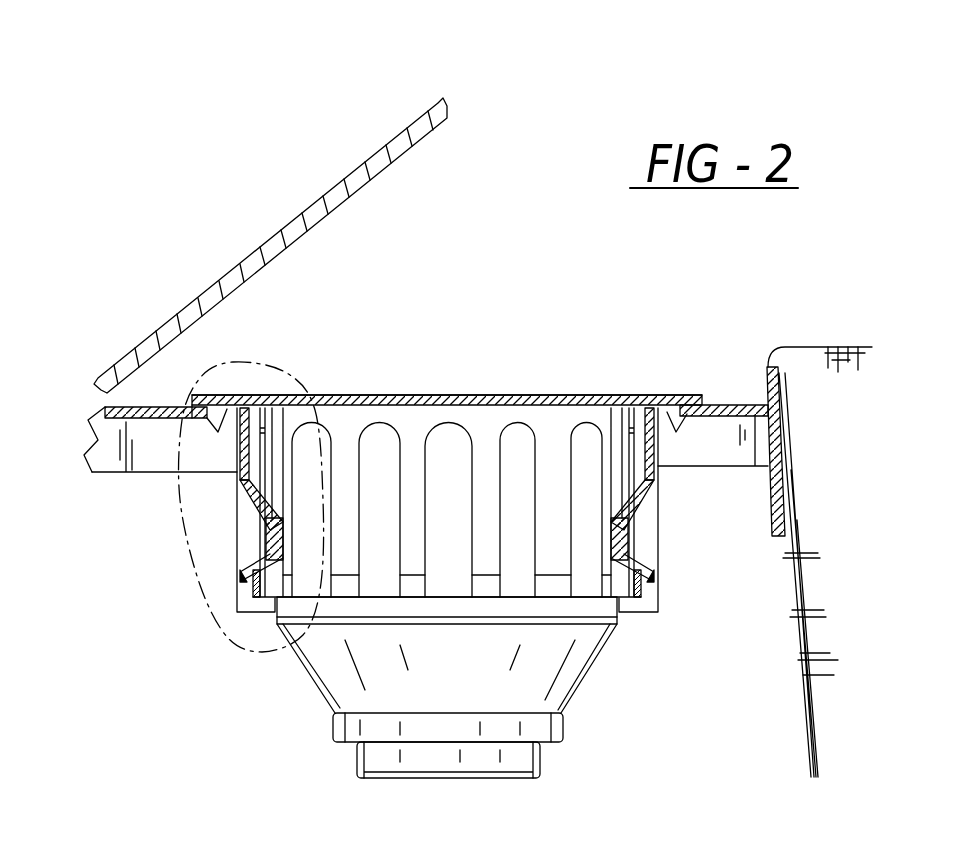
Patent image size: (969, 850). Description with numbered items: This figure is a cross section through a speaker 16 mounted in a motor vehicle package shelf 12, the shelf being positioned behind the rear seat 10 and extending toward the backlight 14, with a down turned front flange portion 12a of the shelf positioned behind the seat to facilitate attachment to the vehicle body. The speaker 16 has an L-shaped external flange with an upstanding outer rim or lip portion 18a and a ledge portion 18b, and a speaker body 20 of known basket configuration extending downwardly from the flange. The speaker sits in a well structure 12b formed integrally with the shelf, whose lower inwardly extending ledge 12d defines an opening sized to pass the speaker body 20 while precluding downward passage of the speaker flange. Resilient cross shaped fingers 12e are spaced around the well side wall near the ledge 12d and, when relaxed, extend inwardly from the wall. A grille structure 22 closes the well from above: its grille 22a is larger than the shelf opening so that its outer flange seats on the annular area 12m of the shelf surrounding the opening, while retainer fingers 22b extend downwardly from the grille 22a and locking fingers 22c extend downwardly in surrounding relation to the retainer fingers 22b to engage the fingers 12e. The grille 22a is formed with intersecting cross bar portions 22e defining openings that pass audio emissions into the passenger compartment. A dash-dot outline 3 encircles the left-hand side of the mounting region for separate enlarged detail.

The detail circle 3 is at (280, 372).
The rear seat 10 is at (826, 342).
The package shelf 12 is at (738, 398).
The down turned front flange portion 12a is at (789, 572).
The well structure 12b is at (230, 525).
The ledge 12d is at (262, 612).
The resilient fingers 12e is at (233, 548).
The annular area 12m is at (160, 452).
The backlight 14 is at (356, 168).
The speaker 16 is at (290, 729).
The outer rim or lip portion 18a is at (610, 608).
The ledge portion 18b is at (645, 588).
The speaker body 20 is at (582, 693).
The grille structure 22 is at (553, 346).
The grille 22a is at (470, 394).
The retainer fingers 22b is at (474, 511).
The locking fingers 22c is at (712, 448).
The cross bar portions 22e is at (376, 395).